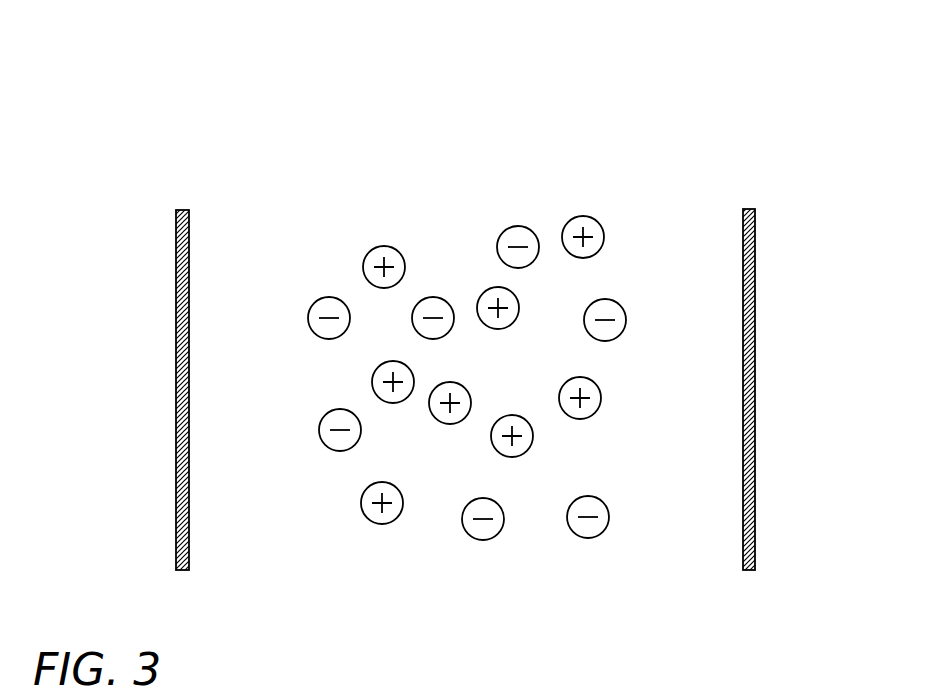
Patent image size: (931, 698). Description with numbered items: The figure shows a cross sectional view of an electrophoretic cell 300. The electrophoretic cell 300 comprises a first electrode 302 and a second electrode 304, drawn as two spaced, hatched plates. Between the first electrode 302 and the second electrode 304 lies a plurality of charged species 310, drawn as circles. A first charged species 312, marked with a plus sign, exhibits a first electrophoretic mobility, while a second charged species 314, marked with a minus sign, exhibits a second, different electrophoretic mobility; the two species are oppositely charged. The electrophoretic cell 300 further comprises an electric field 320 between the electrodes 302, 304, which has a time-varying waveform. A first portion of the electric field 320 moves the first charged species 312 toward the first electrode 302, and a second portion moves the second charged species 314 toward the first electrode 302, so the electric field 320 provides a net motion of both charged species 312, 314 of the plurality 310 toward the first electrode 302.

The electrophoretic cell 300 is at (679, 70).
The first electrode 302 is at (185, 208).
The second electrode 304 is at (750, 208).
The plurality of charged species 310 is at (361, 146).
The first charged species 312 is at (384, 246).
The second charged species 314 is at (330, 297).
The electric field 320 is at (531, 378).